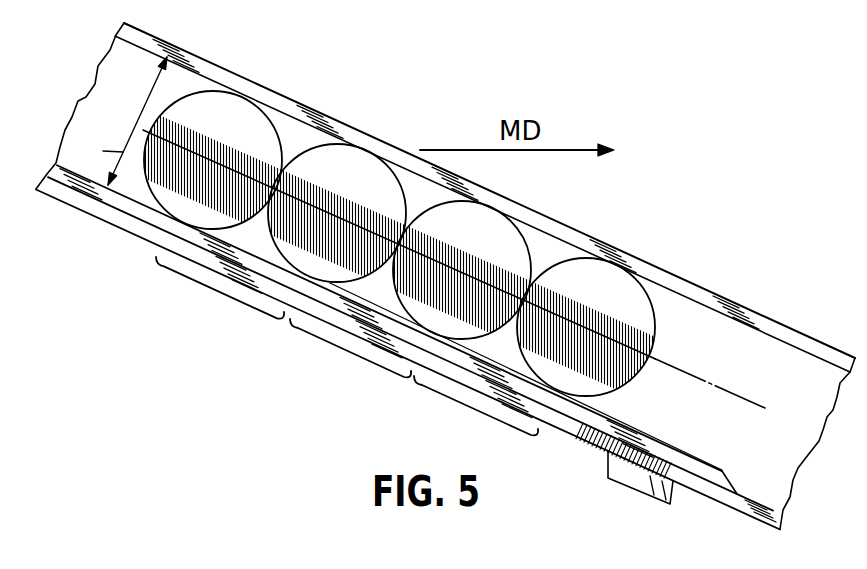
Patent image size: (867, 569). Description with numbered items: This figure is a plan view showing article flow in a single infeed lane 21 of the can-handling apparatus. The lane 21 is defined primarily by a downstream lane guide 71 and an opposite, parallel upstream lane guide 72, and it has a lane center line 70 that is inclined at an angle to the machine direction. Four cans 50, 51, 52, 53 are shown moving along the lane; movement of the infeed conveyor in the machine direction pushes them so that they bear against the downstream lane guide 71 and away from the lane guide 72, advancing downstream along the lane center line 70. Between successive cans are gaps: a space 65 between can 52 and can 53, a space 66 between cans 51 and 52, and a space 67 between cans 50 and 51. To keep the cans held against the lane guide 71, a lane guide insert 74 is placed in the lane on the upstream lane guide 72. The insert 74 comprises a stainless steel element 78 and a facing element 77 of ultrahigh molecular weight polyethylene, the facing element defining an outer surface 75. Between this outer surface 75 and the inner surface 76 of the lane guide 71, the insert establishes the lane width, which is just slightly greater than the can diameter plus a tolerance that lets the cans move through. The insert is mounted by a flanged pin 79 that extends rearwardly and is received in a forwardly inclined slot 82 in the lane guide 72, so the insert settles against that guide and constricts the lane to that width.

The infeed lane 21 is at (116, 121).
The can 50 is at (610, 288).
The can 51 is at (489, 236).
The can 52 is at (363, 178).
The can 53 is at (243, 124).
The space 65 is at (222, 298).
The space 66 is at (347, 363).
The space 67 is at (475, 408).
The lane center line 70 is at (763, 415).
The downstream lane guide 71 is at (763, 327).
The upstream lane guide 72 is at (742, 507).
The lane guide insert 74 is at (677, 450).
The outer surface 75 is at (703, 461).
The inner surface 76 is at (714, 312).
The facing element 77 is at (632, 433).
The stainless steel element 78 is at (692, 470).
The flanged pin 79 is at (612, 477).
The forwardly inclined slot 82 is at (595, 452).